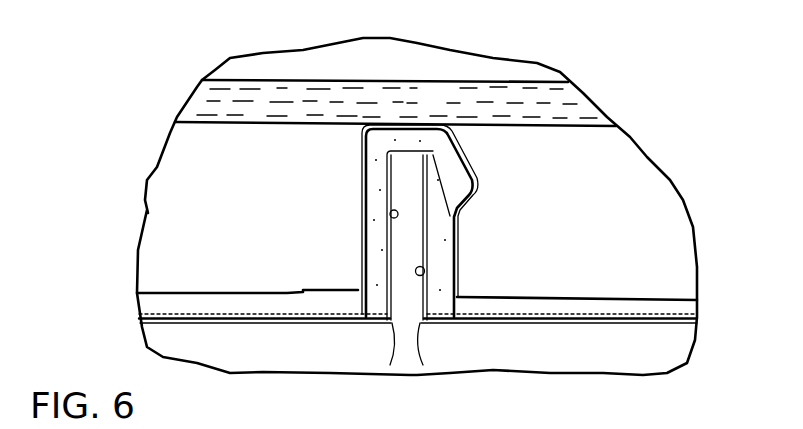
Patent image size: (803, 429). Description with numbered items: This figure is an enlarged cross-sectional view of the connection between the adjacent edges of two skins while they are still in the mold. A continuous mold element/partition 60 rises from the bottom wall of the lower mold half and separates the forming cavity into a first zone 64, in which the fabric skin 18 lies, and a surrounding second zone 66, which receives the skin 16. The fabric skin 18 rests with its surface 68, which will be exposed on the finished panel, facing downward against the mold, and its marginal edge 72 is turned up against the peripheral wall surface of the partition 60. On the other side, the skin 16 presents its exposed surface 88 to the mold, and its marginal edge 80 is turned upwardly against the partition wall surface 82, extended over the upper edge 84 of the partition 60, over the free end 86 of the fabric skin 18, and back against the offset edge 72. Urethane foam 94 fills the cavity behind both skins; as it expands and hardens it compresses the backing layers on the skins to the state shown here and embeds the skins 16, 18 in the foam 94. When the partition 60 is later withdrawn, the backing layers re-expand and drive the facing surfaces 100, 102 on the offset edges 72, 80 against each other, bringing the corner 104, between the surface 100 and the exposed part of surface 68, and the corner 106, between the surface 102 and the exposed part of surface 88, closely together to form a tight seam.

The skin 16 is at (220, 302).
The fabric skin 18 is at (455, 233).
The mold element/partition 60 is at (405, 195).
The first zone 64 is at (582, 208).
The second zone 66 is at (225, 218).
The surface 68 is at (560, 323).
The marginal edge 72 is at (432, 203).
The marginal edge 80 is at (365, 177).
The partition wall surface 82 is at (392, 254).
The upper edge 84 is at (397, 140).
The free end 86 is at (432, 133).
The surface 88 is at (287, 310).
The foam 94 is at (621, 253).
The facing surface 100 is at (425, 272).
The facing surface 102 is at (390, 212).
The corner 104 is at (423, 365).
The corner 106 is at (390, 365).